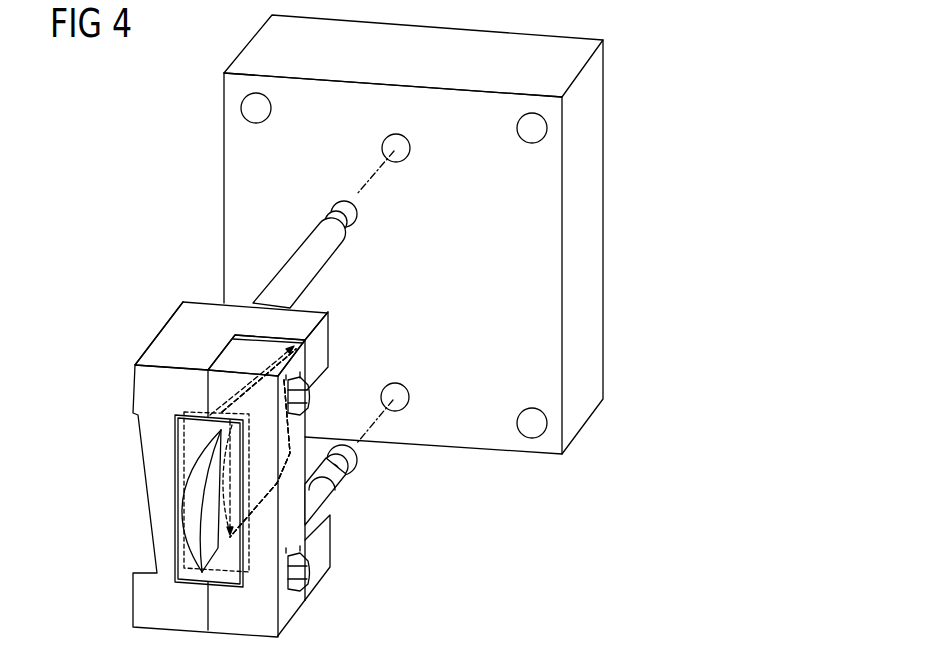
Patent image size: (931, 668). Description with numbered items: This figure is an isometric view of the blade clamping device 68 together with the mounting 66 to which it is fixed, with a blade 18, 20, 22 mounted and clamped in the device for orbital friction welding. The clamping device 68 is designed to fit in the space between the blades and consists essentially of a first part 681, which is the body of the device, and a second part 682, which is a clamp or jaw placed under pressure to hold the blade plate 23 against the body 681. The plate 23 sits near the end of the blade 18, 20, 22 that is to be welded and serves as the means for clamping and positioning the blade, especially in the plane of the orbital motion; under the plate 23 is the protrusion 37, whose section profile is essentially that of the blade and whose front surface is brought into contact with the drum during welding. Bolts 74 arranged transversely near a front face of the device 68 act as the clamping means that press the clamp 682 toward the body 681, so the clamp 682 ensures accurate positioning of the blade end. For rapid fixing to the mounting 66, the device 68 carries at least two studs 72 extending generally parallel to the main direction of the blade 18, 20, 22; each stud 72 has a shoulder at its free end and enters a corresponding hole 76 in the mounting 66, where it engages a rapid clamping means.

The mounting 66 is at (172, 179).
The blade clamping device 68 is at (120, 334).
The first part 681 is at (170, 337).
The second part 682 is at (250, 352).
The plate 23 is at (185, 437).
The protrusion 37 is at (185, 522).
The stud 72 is at (295, 267).
The bolt 74 is at (309, 397).
The hole 76 is at (382, 145).
The blade 18 is at (330, 498).
The blade 20 is at (259, 443).
The blade 22 is at (259, 443).